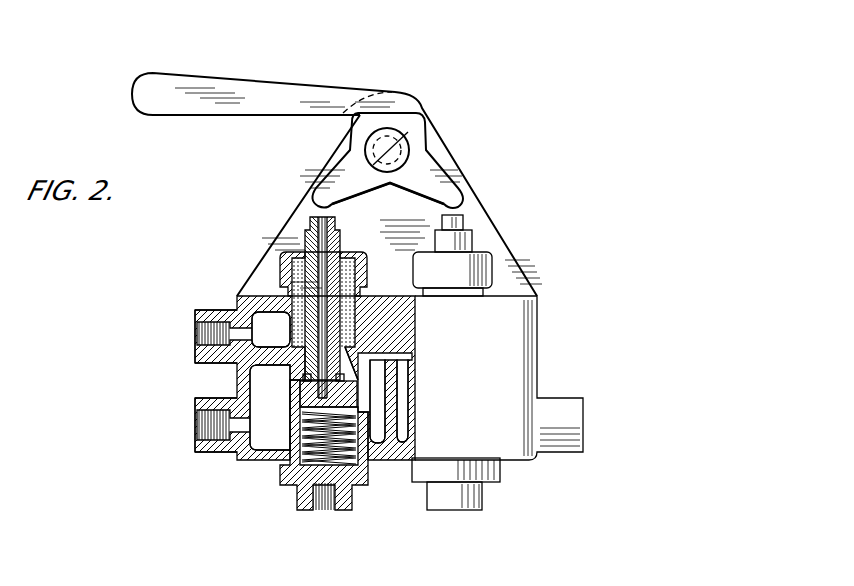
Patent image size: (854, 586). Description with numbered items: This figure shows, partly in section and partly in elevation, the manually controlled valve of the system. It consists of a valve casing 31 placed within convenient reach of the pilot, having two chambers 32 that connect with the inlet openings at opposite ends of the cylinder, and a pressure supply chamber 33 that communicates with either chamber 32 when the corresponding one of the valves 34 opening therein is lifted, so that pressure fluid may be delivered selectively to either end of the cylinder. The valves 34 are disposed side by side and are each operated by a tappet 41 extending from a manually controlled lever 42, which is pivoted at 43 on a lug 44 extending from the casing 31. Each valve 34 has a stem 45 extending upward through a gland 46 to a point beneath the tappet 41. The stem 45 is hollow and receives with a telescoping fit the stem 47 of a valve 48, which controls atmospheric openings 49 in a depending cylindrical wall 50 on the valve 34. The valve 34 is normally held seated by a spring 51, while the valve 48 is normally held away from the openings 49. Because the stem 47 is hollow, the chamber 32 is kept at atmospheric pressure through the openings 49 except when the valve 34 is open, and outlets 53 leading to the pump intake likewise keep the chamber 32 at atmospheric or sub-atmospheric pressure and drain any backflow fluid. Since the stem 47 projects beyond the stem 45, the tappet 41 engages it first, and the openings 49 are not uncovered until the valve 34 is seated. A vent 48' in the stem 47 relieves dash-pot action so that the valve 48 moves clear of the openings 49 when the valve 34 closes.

The valve casing 31 is at (523, 375).
The chambers 32 is at (238, 462).
The pressure supply chamber 33 is at (270, 325).
The valves 34 is at (352, 357).
The tappet 41 is at (457, 190).
The manually controlled lever 42 is at (238, 85).
The pivot 43 is at (402, 150).
The lug 44 is at (485, 223).
The stems 45 is at (338, 240).
The glands 46 is at (366, 262).
The stems 47 is at (303, 223).
The valves 48 is at (379, 390).
The vent 48' is at (425, 393).
The atmospheric openings 49 is at (360, 405).
The depending cylindrical wall 50 is at (290, 393).
The springs 51 is at (282, 472).
The outlets 53 is at (452, 535).